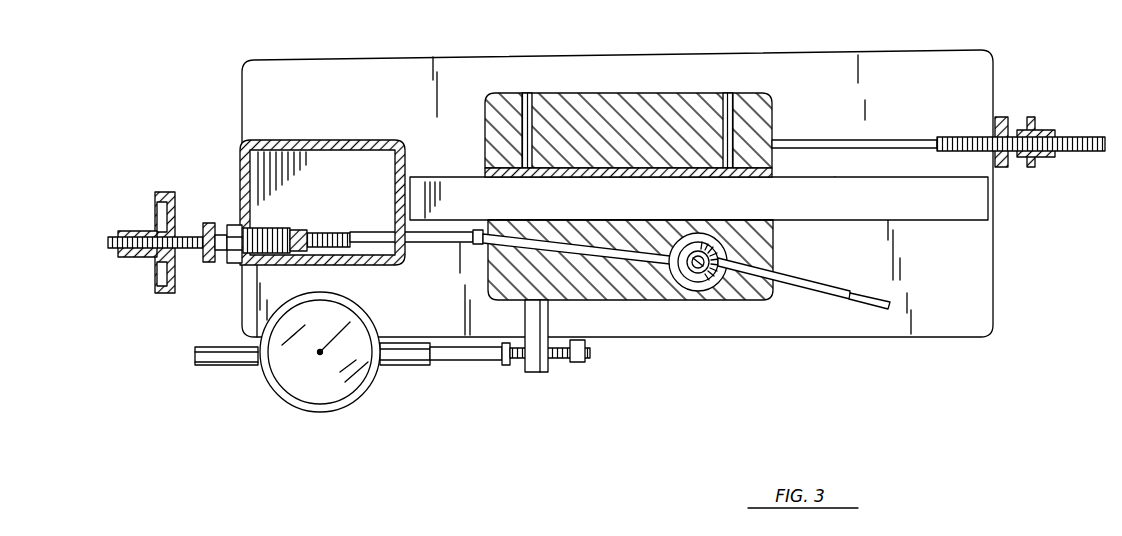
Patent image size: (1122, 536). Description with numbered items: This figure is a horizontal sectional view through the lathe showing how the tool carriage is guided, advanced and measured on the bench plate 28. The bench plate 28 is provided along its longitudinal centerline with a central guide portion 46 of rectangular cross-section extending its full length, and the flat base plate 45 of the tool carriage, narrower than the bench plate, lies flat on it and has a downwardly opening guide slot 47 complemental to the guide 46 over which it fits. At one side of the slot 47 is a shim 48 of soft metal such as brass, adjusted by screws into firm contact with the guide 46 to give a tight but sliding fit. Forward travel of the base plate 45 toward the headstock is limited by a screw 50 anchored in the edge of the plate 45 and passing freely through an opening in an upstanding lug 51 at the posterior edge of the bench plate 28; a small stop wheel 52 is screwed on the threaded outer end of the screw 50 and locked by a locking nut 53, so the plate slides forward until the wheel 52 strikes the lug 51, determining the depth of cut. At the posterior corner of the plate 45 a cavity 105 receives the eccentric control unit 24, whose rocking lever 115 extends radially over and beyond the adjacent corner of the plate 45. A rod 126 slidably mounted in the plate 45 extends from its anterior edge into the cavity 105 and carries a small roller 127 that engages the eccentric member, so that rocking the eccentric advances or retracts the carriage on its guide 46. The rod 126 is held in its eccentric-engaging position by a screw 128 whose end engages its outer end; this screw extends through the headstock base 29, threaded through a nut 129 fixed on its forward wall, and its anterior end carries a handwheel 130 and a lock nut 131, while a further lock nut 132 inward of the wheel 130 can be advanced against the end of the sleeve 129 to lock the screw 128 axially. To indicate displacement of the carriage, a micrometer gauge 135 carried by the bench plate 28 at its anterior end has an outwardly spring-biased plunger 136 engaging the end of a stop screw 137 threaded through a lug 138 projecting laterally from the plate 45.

The bench plate 28 is at (372, 58).
The headstock base 29 is at (308, 140).
The base plate 45 is at (612, 93).
The shim 48 is at (572, 178).
The screw 50 is at (863, 140).
The lug 51 is at (1000, 115).
The stop wheel 52 is at (1033, 117).
The locking nut 53 is at (1045, 160).
The cavity 105 is at (685, 222).
The guide slot 47 is at (735, 220).
The guide portion 46 is at (902, 203).
The rocking lever 115 is at (815, 290).
The eccentric control unit 24 is at (757, 274).
The rod 126 is at (585, 275).
The roller 127 is at (668, 290).
The screw 128 is at (447, 255).
The nut 129 is at (273, 230).
The handwheel 130 is at (165, 190).
The lock nut 131 is at (140, 258).
The lock nut 132 is at (208, 222).
The micrometer gauge 135 is at (325, 398).
The plunger 136 is at (465, 360).
The stop screw 137 is at (580, 365).
The lug 138 is at (530, 375).